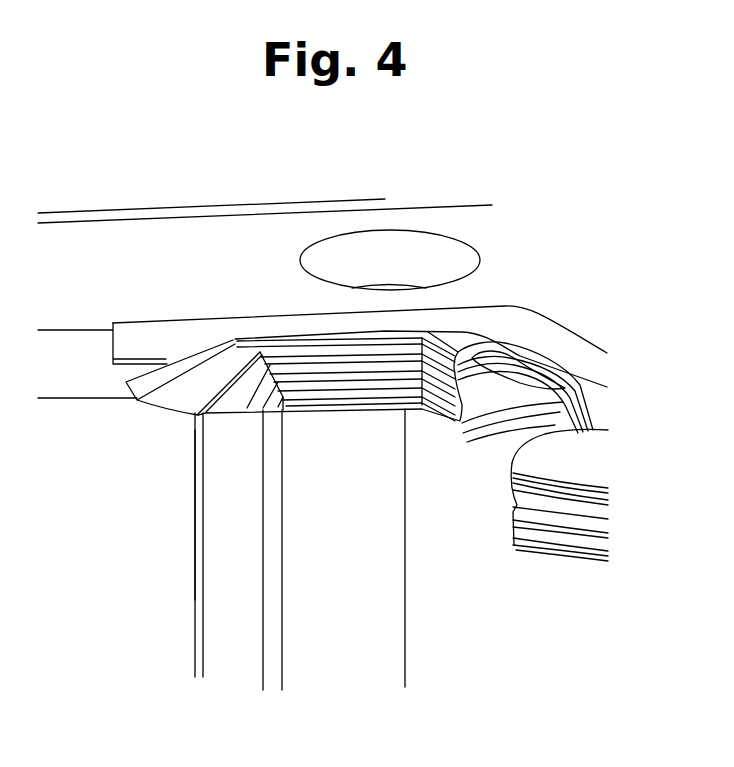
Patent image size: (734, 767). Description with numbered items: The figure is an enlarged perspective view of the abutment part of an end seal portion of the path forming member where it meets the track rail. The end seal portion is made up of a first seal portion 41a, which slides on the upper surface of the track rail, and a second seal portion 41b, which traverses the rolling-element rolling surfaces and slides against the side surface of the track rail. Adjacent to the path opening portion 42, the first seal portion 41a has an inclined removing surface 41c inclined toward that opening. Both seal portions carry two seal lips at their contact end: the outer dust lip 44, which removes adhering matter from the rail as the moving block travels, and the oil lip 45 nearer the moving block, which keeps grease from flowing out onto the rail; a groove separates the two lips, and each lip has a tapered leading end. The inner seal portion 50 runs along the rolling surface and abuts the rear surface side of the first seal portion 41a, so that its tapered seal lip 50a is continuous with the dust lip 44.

The path opening portion 42 is at (60, 351).
The first seal portion 41a is at (337, 357).
The second seal portion 41b is at (580, 460).
The inclined removing surface 41c is at (185, 362).
The dust lip 44 is at (482, 382).
The oil lip 45 is at (492, 445).
The inner seal portion 50 is at (227, 582).
The seal lip 50a is at (201, 517).